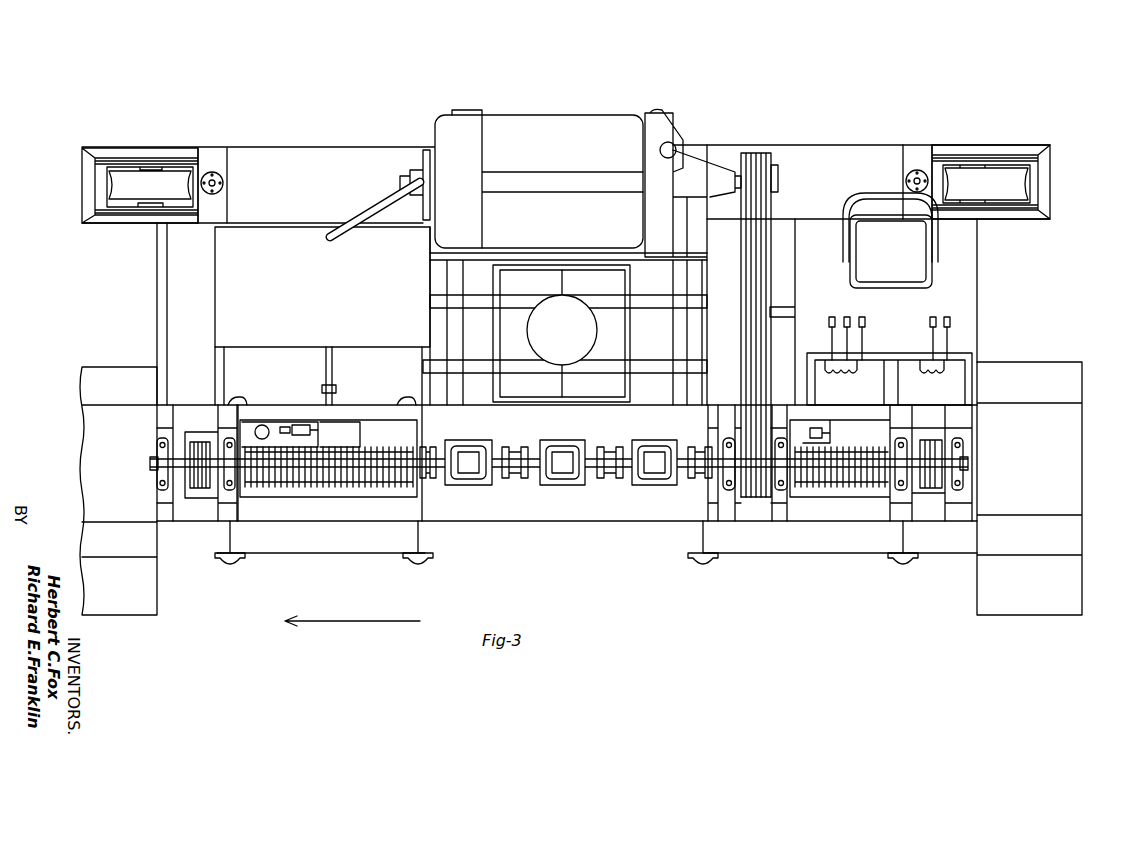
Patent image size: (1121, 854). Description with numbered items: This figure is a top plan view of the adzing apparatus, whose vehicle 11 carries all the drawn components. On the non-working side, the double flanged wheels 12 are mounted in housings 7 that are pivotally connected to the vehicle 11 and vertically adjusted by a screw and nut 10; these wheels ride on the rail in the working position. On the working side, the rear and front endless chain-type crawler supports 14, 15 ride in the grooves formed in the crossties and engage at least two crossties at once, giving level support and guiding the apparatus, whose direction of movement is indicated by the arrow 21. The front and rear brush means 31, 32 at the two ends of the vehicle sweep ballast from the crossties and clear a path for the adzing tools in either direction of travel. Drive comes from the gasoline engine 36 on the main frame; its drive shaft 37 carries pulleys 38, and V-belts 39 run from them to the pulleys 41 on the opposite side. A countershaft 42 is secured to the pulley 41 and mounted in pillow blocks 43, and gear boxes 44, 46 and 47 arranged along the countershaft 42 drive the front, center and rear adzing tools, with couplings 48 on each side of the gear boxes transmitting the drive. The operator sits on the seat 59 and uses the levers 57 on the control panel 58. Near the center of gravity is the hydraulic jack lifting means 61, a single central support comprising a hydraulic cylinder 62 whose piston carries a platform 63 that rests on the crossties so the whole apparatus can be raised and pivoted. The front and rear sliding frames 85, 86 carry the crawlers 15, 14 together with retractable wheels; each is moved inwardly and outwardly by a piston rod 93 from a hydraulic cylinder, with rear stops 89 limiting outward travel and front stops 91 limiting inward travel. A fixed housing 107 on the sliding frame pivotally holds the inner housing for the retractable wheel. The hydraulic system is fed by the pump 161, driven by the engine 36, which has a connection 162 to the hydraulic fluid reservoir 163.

The housing 7 is at (140, 205).
The nut 10 is at (221, 177).
The double flanged wheel 12 is at (160, 180).
The pump 161 is at (407, 174).
The connection 162 is at (368, 208).
The hydraulic fluid reservoir 163 is at (335, 292).
The gasoline engine 36 is at (585, 159).
The drive shaft 37 is at (778, 183).
The pulleys 38 is at (772, 168).
The V-belts 39 is at (771, 216).
The pulleys 41 is at (738, 486).
The countershaft 42 is at (372, 460).
The pillow blocks 43 is at (158, 464).
The gear box 44 is at (468, 462).
The gear box 46 is at (562, 462).
The gear box 47 is at (654, 462).
The couplings 48 is at (428, 449).
The levers 57 is at (830, 318).
The control panel 58 is at (885, 347).
The seat 59 is at (901, 240).
The hydraulic jack lifting means 61 is at (577, 314).
The hydraulic cylinder 62 is at (574, 340).
The platform 63 is at (630, 356).
The rear stops 89 is at (236, 400).
The piston rod 93 is at (333, 385).
The vehicle 11 is at (579, 528).
The rear crawler support 14 is at (868, 487).
The front crawler support 15 is at (334, 489).
The arrow 21 is at (354, 621).
The front brush means 31 is at (103, 468).
The rear brush means 32 is at (1060, 465).
The front sliding frame 85 is at (408, 547).
The rear sliding frame 86 is at (714, 547).
The front stops 91 is at (224, 568).
The housing 107 is at (337, 547).